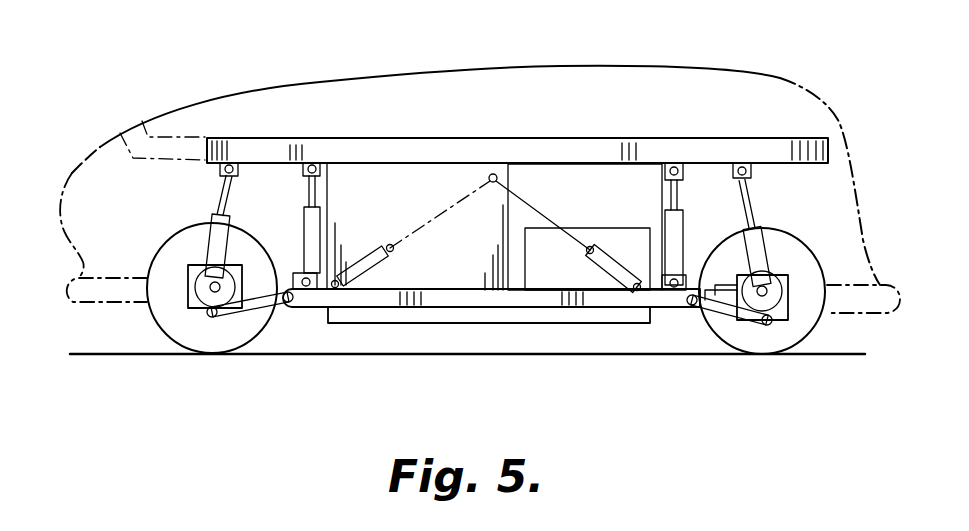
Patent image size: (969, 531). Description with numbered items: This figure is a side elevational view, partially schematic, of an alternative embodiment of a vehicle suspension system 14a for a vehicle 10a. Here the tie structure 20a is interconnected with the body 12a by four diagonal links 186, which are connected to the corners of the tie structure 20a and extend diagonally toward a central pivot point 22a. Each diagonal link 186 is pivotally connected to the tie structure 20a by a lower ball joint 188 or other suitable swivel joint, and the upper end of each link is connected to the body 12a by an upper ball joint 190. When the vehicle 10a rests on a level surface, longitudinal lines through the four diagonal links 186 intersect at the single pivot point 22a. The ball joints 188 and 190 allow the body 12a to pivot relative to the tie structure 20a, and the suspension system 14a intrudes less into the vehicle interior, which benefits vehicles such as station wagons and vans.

The vehicle 10a is at (480, 62).
The body 12a is at (633, 57).
The suspension system 14a is at (679, 332).
The tie structure 20a is at (366, 332).
The central pivot point 22a is at (489, 178).
The diagonal links 186 is at (618, 262).
The lower ball joints 188 is at (636, 291).
The upper ball joints 190 is at (588, 247).